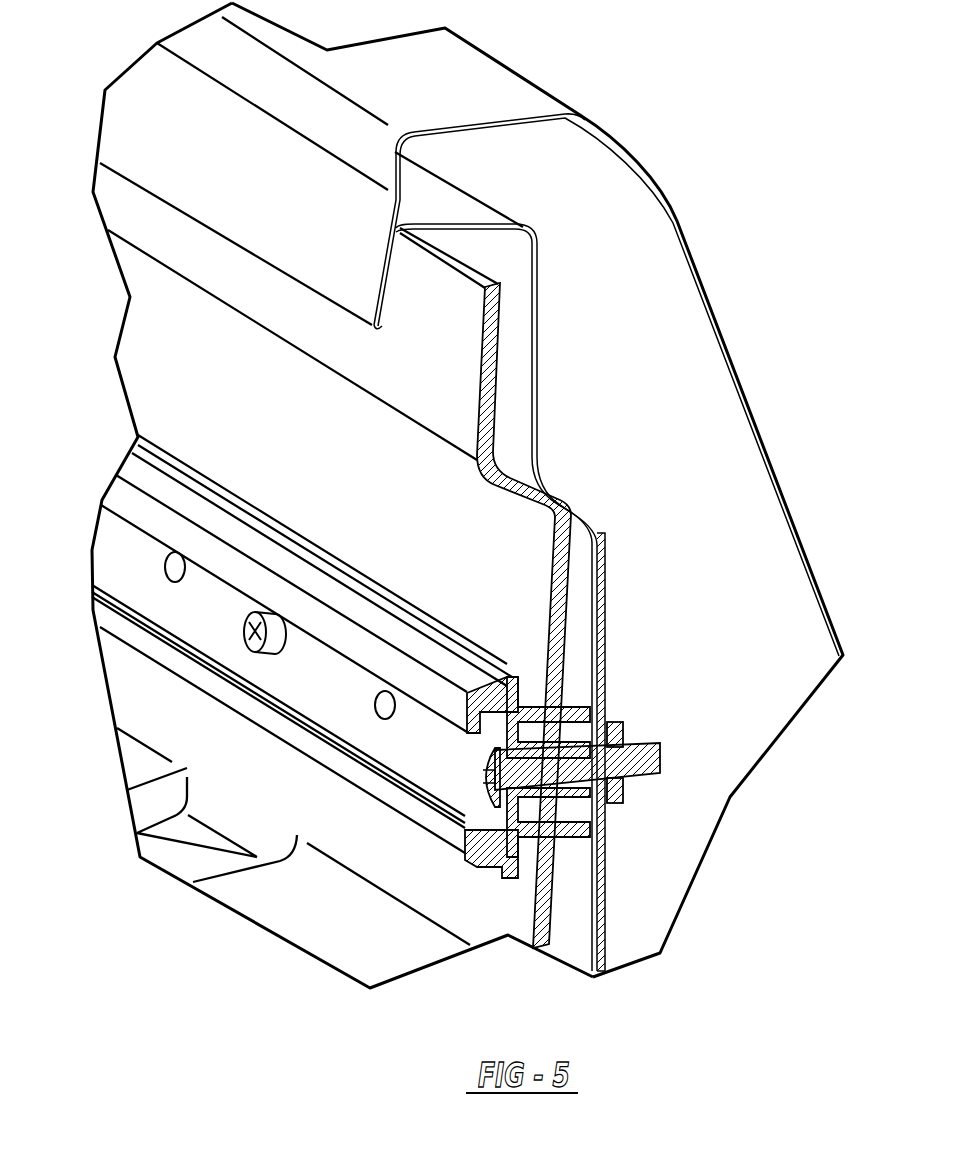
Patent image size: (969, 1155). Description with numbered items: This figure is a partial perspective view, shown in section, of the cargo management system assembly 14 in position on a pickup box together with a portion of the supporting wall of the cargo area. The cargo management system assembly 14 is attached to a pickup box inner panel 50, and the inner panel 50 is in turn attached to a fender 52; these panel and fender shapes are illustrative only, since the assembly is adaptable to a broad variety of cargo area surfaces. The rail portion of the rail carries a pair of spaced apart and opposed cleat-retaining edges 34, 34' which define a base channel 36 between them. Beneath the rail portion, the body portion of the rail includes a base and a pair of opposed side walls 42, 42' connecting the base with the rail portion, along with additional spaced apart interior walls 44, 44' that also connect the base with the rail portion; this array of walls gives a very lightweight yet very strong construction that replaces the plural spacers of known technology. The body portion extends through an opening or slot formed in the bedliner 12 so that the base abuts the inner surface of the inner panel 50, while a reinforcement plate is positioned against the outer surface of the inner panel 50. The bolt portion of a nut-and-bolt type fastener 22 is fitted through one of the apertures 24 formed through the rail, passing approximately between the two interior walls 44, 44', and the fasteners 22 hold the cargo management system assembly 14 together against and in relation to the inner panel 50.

The bedliner 12 is at (153, 368).
The cargo management system assembly 14 is at (143, 482).
The mechanical fasteners 22 is at (250, 650).
The apertures 24 is at (173, 565).
The cleat-retaining edge 34 is at (305, 779).
The cleat-retaining edge 34' is at (309, 604).
The base channel 36 is at (440, 755).
The side wall 42 is at (626, 851).
The side wall 42' is at (600, 697).
The interior wall 44 is at (607, 774).
The interior wall 44' is at (643, 743).
The inner panel 50 is at (540, 358).
The fender 52 is at (490, 83).